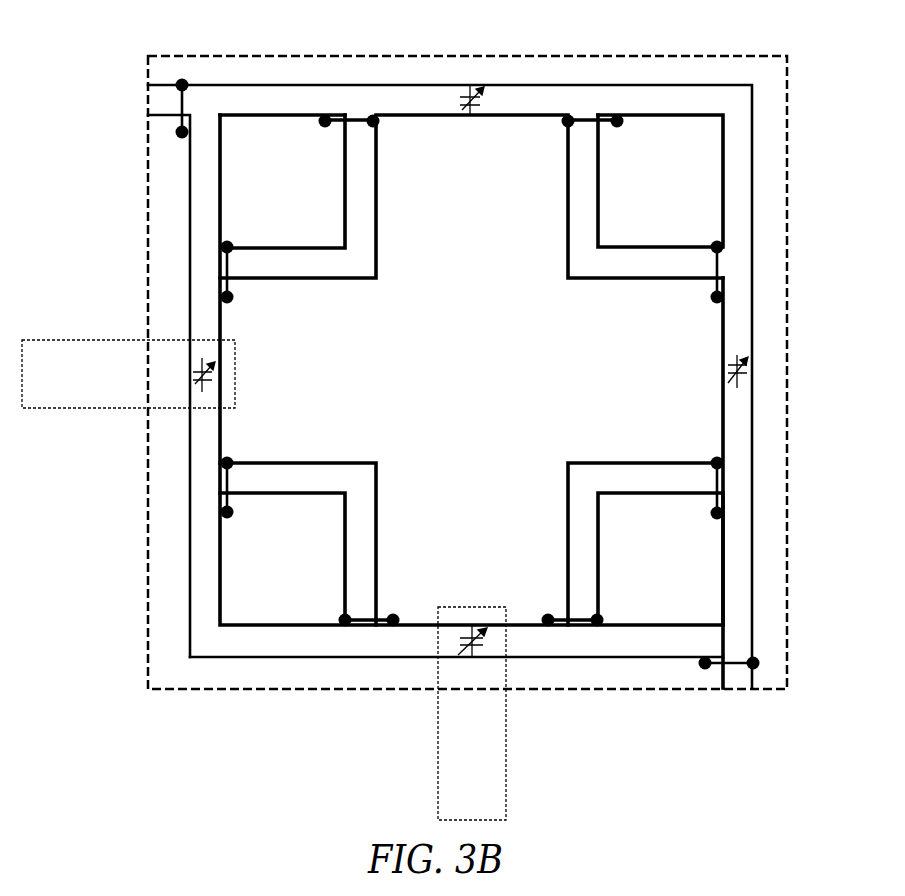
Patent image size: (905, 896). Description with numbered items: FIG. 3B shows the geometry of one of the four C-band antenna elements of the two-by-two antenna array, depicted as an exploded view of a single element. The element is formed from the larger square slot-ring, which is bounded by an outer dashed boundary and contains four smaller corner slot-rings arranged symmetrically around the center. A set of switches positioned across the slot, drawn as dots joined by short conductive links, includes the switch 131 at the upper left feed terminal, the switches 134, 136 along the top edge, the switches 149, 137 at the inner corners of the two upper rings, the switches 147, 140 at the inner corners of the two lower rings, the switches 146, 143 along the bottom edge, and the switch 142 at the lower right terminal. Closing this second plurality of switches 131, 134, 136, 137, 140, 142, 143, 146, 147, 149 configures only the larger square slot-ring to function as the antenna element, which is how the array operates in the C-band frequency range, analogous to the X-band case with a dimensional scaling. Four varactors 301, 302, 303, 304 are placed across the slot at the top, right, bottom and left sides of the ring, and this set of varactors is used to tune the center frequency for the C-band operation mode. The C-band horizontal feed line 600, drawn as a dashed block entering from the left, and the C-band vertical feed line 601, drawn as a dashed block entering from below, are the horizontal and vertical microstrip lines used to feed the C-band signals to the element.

The switch 131 is at (178, 101).
The switch 134 is at (354, 120).
The switch 136 is at (590, 120).
The switch 137 is at (718, 265).
The switch 140 is at (718, 483).
The switch 142 is at (734, 661).
The switch 143 is at (583, 622).
The switch 146 is at (362, 622).
The switch 147 is at (224, 488).
The switch 149 is at (224, 265).
The varactor 301 is at (478, 118).
The varactor 302 is at (727, 363).
The varactor 303 is at (487, 643).
The varactor 304 is at (222, 377).
The C-band horizontal feed line 600 is at (97, 384).
The C-band vertical feed line 601 is at (489, 772).